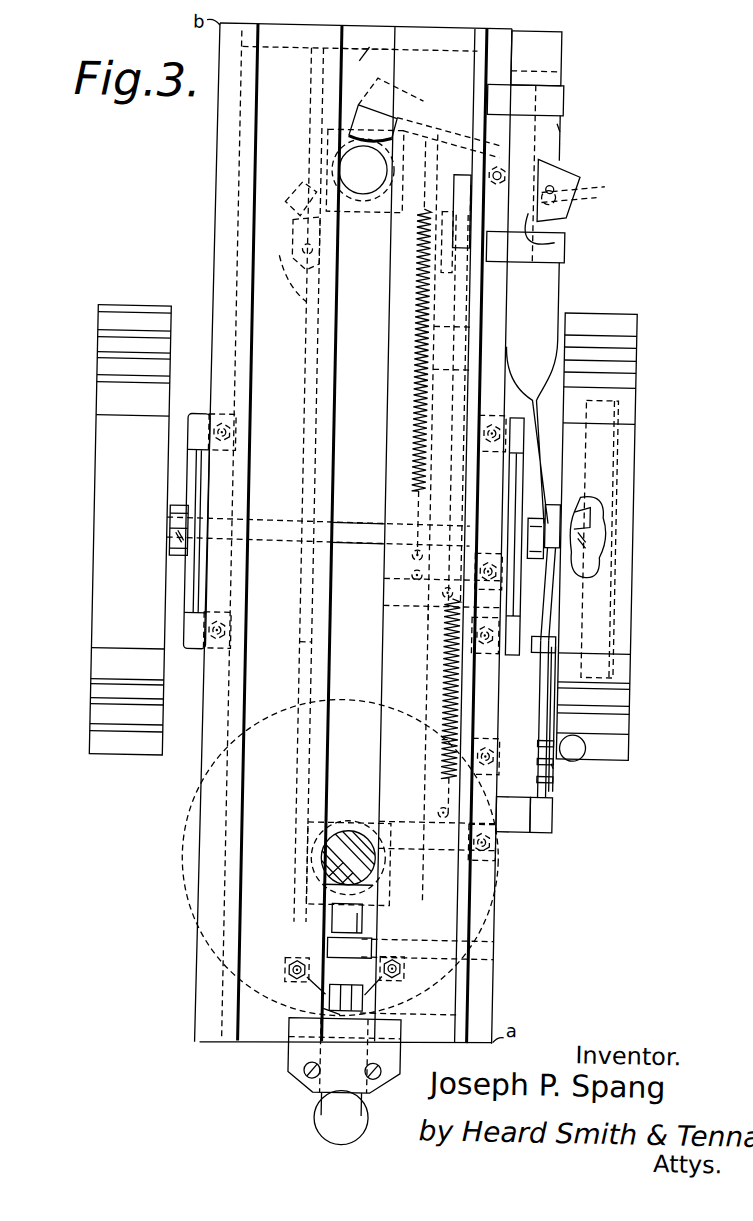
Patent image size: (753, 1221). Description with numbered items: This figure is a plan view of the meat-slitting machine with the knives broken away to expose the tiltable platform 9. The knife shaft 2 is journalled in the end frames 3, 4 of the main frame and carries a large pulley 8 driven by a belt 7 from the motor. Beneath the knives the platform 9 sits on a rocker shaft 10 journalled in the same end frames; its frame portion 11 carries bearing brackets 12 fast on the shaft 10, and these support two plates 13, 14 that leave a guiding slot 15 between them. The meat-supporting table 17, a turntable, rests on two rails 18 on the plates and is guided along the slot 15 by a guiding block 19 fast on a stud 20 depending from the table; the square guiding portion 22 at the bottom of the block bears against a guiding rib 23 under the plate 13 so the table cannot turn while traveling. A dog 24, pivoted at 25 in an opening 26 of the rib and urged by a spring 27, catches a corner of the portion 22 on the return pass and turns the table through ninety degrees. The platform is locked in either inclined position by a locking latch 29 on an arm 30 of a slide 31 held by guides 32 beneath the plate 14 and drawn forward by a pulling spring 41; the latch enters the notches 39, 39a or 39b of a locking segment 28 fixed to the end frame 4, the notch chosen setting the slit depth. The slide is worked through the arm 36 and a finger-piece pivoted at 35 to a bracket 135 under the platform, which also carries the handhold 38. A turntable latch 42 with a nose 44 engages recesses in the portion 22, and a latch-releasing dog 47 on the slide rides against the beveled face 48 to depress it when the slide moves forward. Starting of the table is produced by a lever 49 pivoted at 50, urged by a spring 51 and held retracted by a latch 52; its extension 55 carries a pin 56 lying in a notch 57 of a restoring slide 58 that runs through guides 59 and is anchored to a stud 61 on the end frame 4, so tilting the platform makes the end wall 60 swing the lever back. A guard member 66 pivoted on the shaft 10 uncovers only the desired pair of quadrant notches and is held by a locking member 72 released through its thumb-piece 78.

The knife shaft 2 is at (182, 530).
The end frame 3 is at (102, 462).
The end frame 4 is at (646, 558).
The belt 7 is at (600, 538).
The pulley 8 is at (588, 504).
The swinging platform 9 is at (218, 148).
The rocker shaft 10 is at (356, 524).
The frame portion 11 is at (368, 63).
The bearing brackets 12 is at (203, 577).
The plate 13 is at (306, 634).
The plate 14 is at (412, 611).
The guiding slot 15 is at (360, 651).
The meat-supporting table 17 is at (200, 847).
The rails 18 is at (252, 232).
The guiding block 19 is at (350, 885).
The stud 20 is at (348, 850).
The square guiding portion 22 is at (378, 213).
The guiding rib 23 is at (312, 457).
The dog 24 is at (298, 227).
The pivot 25 is at (306, 250).
The opening 26 is at (304, 190).
The spring 27 is at (301, 280).
The locking segment 28 is at (553, 710).
The locking latch 29 is at (569, 811).
The arm 30 is at (533, 822).
The slide 31 is at (455, 666).
The guides 32 is at (420, 568).
The pivot 35 is at (349, 1000).
The laterally-extending arm 36 is at (430, 1041).
The handhold 38 is at (345, 1122).
The notch 39 is at (553, 737).
The notch 39a is at (553, 755).
The notch 39b is at (553, 772).
The pulling spring 41 is at (455, 738).
The locking latch 42 is at (375, 910).
The nose 44 is at (368, 827).
The latch-releasing dog 47 is at (358, 945).
The beveled face 48 is at (350, 918).
The lever 49 is at (367, 121).
The pivot 50 is at (504, 168).
The spring 51 is at (420, 314).
The latch 52 is at (460, 172).
The extension 55 is at (575, 206).
The upstanding pin 56 is at (557, 183).
The notch 57 is at (559, 236).
The restoring slide 58 is at (559, 117).
The guides 59 is at (567, 82).
The end wall 60 is at (581, 166).
The stud 61 is at (563, 522).
The guard member 66 is at (564, 690).
The locking member 72 is at (566, 757).
The thumb-piece 78 is at (590, 752).
The bracket 135 is at (343, 1006).